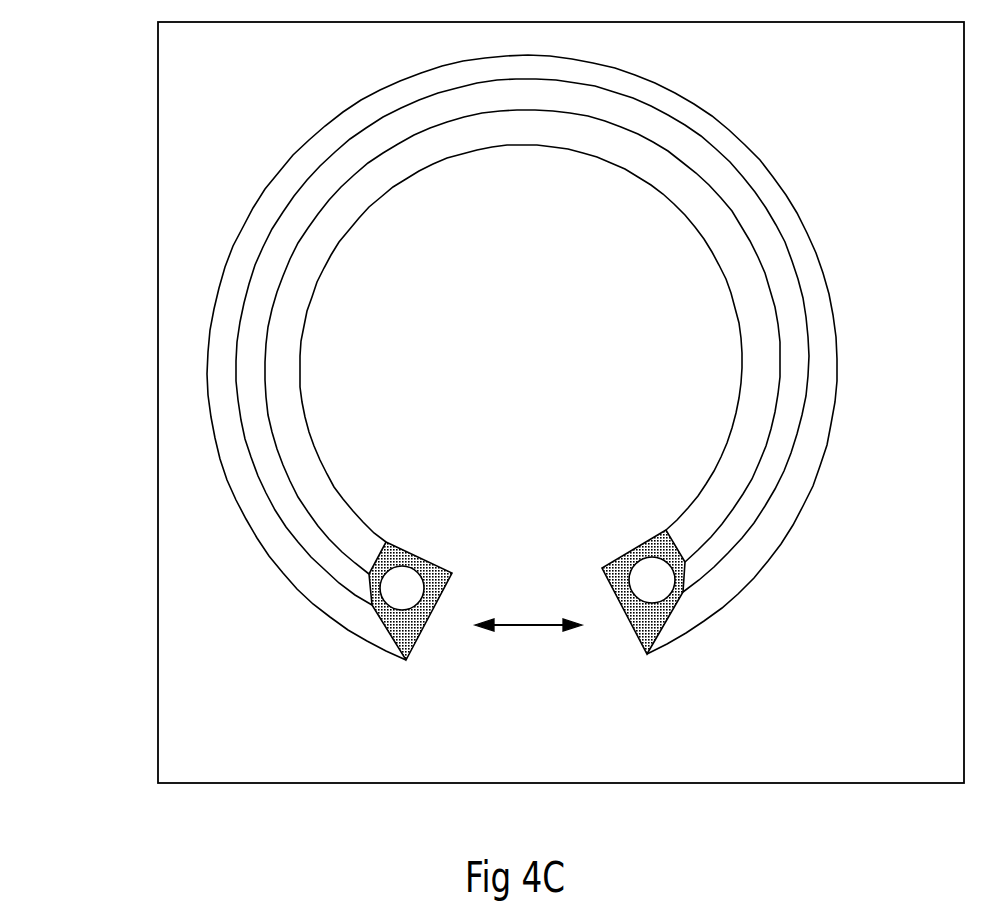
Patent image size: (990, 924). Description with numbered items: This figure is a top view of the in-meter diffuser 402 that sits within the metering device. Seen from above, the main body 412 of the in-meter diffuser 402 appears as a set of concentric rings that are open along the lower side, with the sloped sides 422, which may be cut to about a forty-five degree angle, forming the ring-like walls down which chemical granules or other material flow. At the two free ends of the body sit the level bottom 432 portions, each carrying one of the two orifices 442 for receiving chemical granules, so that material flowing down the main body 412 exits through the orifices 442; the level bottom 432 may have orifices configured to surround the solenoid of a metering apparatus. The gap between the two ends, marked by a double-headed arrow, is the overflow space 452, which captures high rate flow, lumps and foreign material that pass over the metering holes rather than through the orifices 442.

The in-meter diffuser 402 is at (158, 374).
The main body 412 is at (823, 230).
The sloped sides 422 is at (792, 387).
The level bottom 432 is at (672, 632).
The orifices 442 is at (527, 531).
The overflow space 452 is at (528, 626).